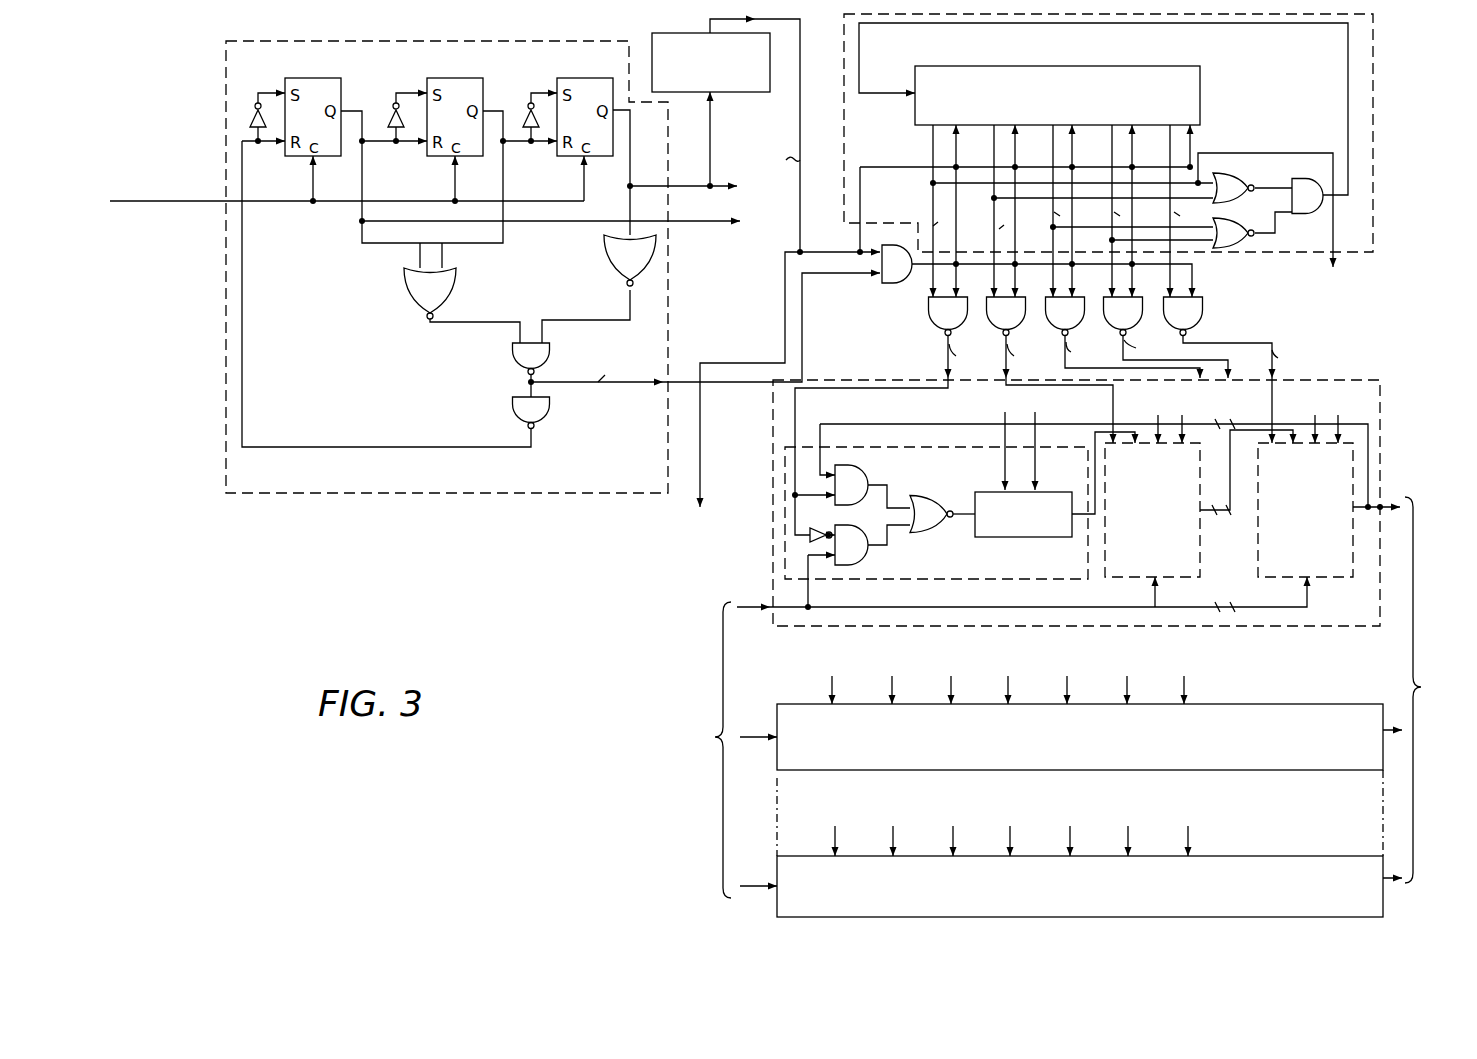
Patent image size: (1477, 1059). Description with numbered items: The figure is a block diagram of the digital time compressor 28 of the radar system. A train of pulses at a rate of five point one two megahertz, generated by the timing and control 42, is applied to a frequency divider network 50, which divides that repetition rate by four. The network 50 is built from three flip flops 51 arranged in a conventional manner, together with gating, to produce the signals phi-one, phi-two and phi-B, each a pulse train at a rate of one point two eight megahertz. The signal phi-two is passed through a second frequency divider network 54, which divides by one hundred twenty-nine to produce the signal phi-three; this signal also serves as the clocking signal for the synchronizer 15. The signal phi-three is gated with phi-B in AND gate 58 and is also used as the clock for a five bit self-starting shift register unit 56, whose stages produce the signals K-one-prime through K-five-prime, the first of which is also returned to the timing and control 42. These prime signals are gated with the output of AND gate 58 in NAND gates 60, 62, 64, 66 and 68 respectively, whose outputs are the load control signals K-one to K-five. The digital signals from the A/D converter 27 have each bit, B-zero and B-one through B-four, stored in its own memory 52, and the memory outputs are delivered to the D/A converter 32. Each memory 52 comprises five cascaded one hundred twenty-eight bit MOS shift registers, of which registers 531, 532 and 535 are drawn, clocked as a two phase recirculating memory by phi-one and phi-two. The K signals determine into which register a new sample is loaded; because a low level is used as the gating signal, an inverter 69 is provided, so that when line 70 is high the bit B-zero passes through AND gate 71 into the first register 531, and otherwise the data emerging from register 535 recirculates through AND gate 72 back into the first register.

The time compressor 28 is at (520, 576).
The frequency divider network 50 is at (522, 40).
The flip flops 51 is at (325, 77).
The memory 52 is at (1382, 443).
The frequency divider network 54 is at (730, 93).
The five bit self-starting shift register unit 56 is at (1377, 192).
The AND gate 58 is at (895, 283).
The NAND gate 60 is at (931, 322).
The NAND gate 62 is at (992, 321).
The NAND gate 64 is at (1052, 318).
The NAND gate 66 is at (1110, 318).
The NAND gate 68 is at (1202, 315).
The inverter 69 is at (830, 527).
The line 70 is at (832, 528).
The AND gate 71 is at (868, 552).
The AND gate 72 is at (868, 469).
The 128 bit shift register 531 is at (800, 441).
The 128 bit shift register 532 is at (1204, 534).
The 128 bit shift register 535 is at (1360, 482).
The timing and control 42 is at (746, 270).
The synchronizer 15 is at (686, 475).
The A/D converter 27 is at (703, 750).
The D/A converter 32 is at (1433, 690).